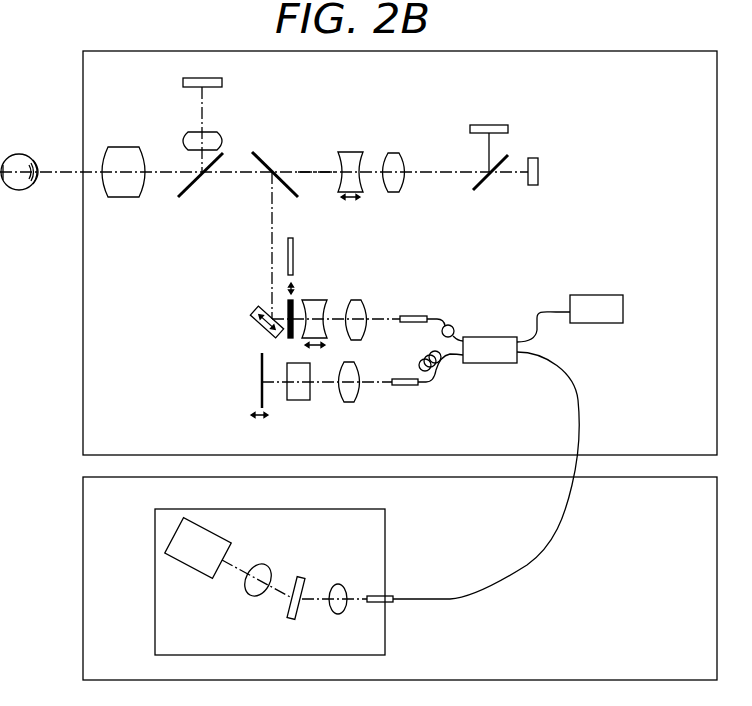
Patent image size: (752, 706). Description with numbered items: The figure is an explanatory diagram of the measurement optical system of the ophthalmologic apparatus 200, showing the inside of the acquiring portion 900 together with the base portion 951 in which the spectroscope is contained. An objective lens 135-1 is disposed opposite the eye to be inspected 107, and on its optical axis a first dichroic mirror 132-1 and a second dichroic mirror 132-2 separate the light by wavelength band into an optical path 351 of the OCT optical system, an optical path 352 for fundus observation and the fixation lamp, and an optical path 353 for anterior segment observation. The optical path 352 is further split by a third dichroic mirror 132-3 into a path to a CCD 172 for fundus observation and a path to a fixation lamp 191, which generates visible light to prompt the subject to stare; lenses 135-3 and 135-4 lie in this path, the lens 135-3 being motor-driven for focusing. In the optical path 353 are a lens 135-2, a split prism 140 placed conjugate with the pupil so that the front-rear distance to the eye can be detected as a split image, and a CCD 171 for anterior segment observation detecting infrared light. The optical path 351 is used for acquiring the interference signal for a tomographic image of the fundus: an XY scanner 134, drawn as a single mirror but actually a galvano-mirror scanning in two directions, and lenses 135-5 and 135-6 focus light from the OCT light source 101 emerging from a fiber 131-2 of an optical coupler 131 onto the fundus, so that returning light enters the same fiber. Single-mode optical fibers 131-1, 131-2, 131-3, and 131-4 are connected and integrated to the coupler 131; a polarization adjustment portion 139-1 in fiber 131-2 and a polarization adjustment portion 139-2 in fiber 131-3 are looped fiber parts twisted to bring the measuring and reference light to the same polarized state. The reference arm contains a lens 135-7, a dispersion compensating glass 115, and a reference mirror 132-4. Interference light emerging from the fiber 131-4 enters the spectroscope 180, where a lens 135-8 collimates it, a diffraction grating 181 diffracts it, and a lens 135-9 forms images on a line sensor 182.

The ophthalmologic apparatus 200 is at (34, 68).
The acquiring portion 900 is at (83, 112).
The base portion 951 is at (83, 540).
The eye to be inspected 107 is at (18, 190).
The objective lens 135-1 is at (125, 197).
The lens 135-2 is at (186, 140).
The lens 135-3 is at (350, 152).
The lens 135-4 is at (392, 153).
The lens 135-5 is at (330, 285).
The lens 135-6 is at (360, 300).
The lens 135-7 is at (350, 403).
The lens 135-8 is at (338, 614).
The lens 135-9 is at (255, 597).
The first dichroic mirror 132-1 is at (190, 195).
The second dichroic mirror 132-2 is at (264, 150).
The third dichroic mirror 132-3 is at (510, 155).
The reference mirror 132-4 is at (262, 370).
The CCD for anterior segment observation 171 is at (183, 82).
The CCD for fundus observation 172 is at (488, 125).
The optical path for anterior segment observation 353 is at (202, 103).
The optical path of OCT optical system 351 is at (272, 200).
The optical path for fundus observation and fixation lamp 352 is at (310, 170).
The fixation lamp 191 is at (533, 186).
The split prism 140 is at (288, 305).
The XY scanner 134 is at (255, 315).
The dispersion compensating glass 115 is at (298, 402).
The optical coupler 131 is at (490, 350).
The single-mode optical fiber 131-1 is at (537, 318).
The single-mode optical fiber 131-2 is at (437, 318).
The single-mode optical fiber 131-3 is at (455, 353).
The single-mode optical fiber 131-4 is at (560, 365).
The polarization adjustment portion on the measuring light side 139-1 is at (455, 328).
The polarization adjustment portion on the reference light side 139-2 is at (425, 358).
The OCT light source 101 is at (596, 309).
The spectroscope 180 is at (155, 518).
The diffraction grating 181 is at (300, 578).
The line sensor 182 is at (198, 548).